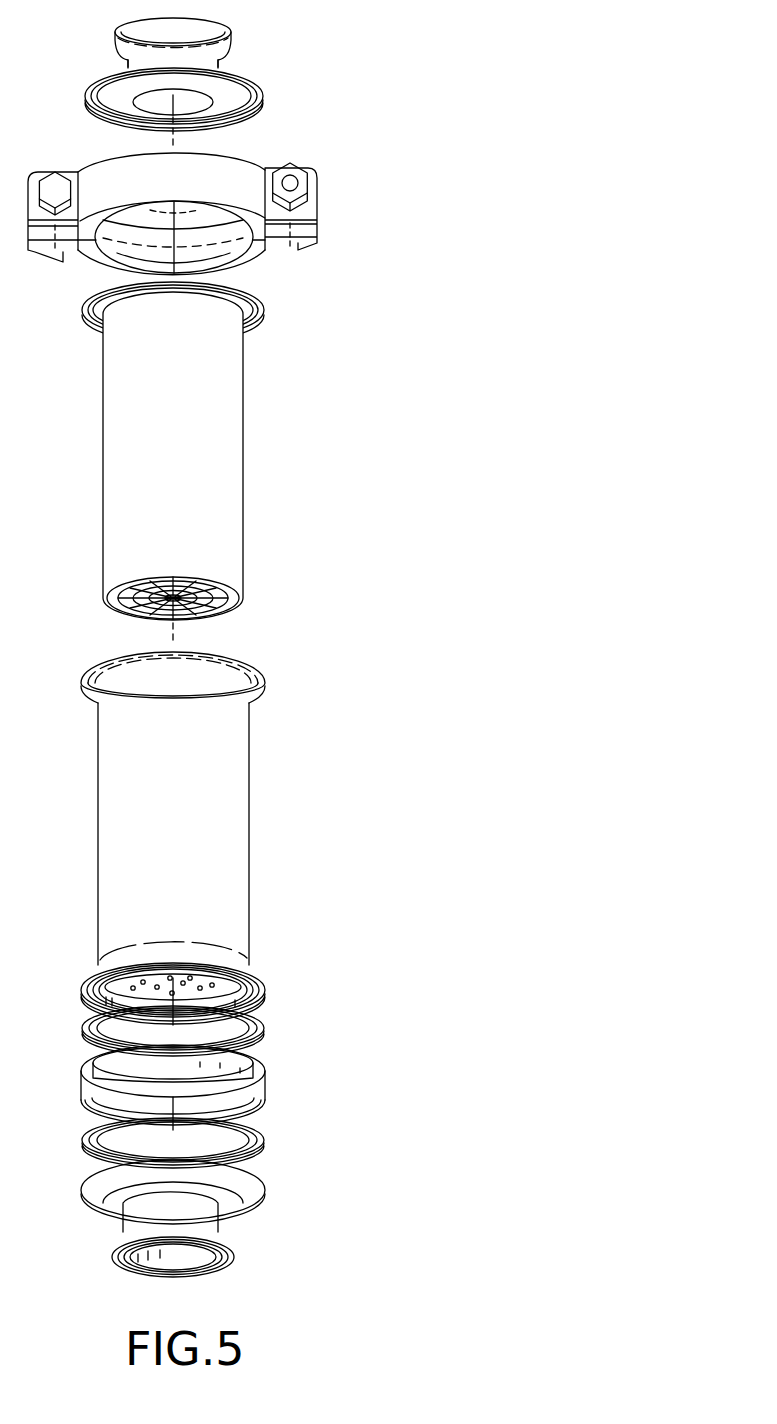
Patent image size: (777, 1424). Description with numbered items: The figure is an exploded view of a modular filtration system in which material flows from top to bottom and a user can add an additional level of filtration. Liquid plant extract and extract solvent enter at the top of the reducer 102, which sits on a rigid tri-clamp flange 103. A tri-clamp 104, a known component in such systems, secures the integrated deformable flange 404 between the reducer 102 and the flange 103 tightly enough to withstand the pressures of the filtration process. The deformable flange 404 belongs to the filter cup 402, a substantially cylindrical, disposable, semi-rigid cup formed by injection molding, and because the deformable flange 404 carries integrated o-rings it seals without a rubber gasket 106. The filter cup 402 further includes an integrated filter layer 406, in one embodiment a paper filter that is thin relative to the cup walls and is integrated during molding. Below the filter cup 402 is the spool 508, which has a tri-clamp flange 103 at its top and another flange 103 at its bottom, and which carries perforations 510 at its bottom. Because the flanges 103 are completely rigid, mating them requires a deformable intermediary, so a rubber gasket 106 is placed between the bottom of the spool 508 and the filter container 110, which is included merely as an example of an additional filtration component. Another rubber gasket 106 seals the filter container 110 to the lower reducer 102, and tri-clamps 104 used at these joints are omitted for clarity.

The reducer 102 is at (218, 62).
The flange 103 is at (228, 33).
The tri-clamp 104 is at (312, 180).
The rubber gasket 106 is at (264, 1036).
The filter container 110 is at (243, 1079).
The filter cup 402 is at (222, 451).
The deformable flange 404 is at (262, 315).
The filter layer 406 is at (240, 601).
The spool 508 is at (249, 823).
The perforations 510 is at (207, 992).